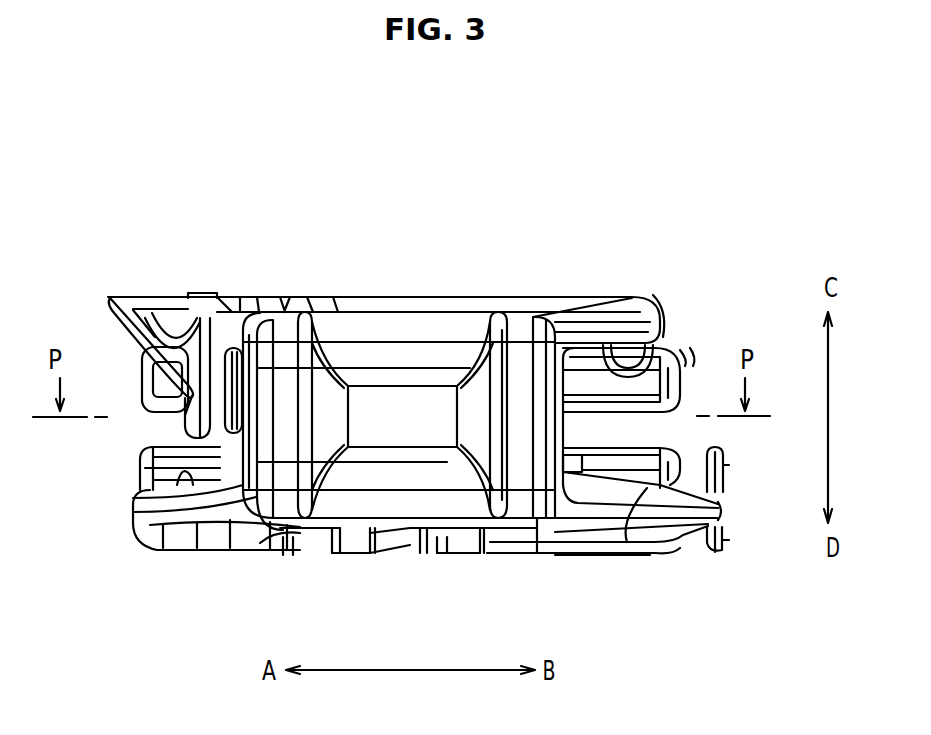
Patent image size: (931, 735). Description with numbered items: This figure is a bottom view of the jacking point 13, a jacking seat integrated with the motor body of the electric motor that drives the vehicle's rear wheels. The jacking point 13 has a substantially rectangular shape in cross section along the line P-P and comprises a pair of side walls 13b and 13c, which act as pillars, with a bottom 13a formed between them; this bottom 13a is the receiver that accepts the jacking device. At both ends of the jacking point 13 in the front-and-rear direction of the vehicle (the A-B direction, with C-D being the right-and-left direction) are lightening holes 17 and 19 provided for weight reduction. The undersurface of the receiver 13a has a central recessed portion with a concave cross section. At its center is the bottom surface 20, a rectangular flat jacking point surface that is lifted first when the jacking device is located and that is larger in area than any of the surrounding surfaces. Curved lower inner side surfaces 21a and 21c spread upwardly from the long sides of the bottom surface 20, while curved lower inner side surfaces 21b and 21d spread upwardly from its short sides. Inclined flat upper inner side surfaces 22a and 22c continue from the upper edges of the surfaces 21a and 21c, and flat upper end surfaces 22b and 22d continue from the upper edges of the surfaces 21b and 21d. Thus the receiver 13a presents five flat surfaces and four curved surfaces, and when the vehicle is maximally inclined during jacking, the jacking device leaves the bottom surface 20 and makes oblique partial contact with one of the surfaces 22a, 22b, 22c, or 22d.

The jacking point 13 is at (618, 253).
The bottom (receiver) 13a is at (426, 330).
The side wall 13b is at (415, 307).
The side wall 13c is at (415, 515).
The lightening hole 17 is at (185, 476).
The lightening hole 19 is at (660, 348).
The bottom surface (jacking point surface) 20 is at (400, 397).
The lower inner side surface 21a is at (440, 378).
The lower inner side surface 21b is at (493, 390).
The lower inner side surface 21c is at (447, 453).
The lower inner side surface 21d is at (307, 400).
The upper inner side surface 22a is at (360, 347).
The upper end surface 22b is at (523, 463).
The upper inner side surface 22c is at (388, 525).
The upper end surface 22d is at (283, 447).